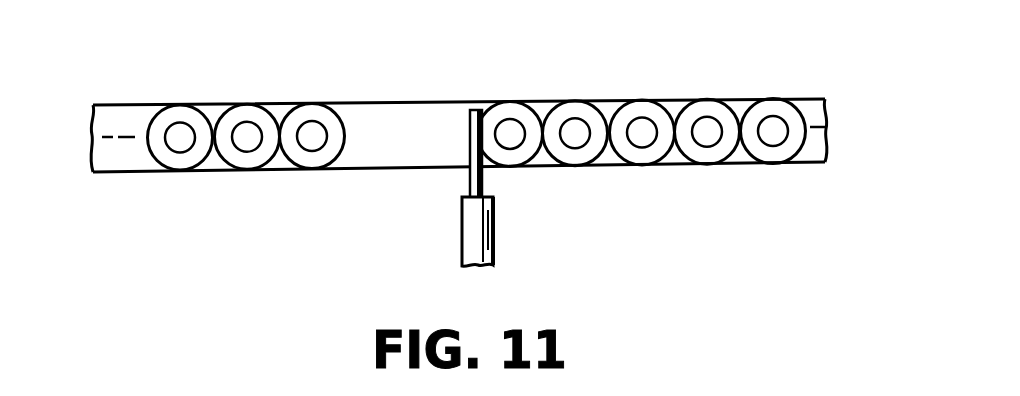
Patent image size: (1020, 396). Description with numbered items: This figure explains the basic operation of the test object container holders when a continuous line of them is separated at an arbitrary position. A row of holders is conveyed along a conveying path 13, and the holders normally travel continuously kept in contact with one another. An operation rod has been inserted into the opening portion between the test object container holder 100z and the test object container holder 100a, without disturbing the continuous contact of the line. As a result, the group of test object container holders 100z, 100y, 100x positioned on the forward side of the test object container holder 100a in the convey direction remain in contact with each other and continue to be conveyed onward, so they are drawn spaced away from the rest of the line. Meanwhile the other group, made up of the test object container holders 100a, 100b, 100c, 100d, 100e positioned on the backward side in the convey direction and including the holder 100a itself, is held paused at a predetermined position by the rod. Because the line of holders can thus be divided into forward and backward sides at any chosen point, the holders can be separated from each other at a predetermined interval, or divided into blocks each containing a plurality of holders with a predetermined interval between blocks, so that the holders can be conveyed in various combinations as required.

The tape / carrier band 13 is at (385, 102).
The test object container holder 100x is at (180, 172).
The test object container holder 100y is at (247, 104).
The test object container holder 100z is at (312, 169).
The test object container holder 100a is at (510, 101).
The test object container holder 100b is at (575, 166).
The test object container holder 100c is at (642, 100).
The test object container holder 100d is at (707, 164).
The test object container holder 100e is at (773, 99).